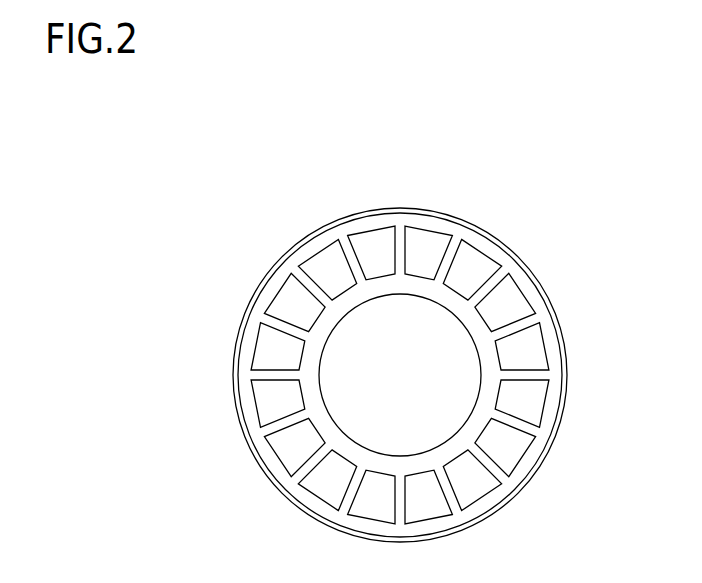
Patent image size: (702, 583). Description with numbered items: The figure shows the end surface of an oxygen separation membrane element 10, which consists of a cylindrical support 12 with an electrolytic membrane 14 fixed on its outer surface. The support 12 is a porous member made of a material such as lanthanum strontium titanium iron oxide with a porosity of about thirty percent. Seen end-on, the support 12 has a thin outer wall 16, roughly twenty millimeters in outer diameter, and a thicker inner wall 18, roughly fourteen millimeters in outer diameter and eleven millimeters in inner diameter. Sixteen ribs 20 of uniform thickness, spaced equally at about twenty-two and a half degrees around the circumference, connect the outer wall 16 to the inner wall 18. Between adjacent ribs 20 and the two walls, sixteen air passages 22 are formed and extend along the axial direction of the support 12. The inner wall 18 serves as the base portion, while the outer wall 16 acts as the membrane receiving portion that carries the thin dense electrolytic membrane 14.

The oxygen separation membrane element 10 is at (556, 266).
The support 12 is at (553, 313).
The electrolytic membrane 14 is at (283, 255).
The outer wall 16 is at (443, 223).
The inner wall 18 is at (387, 290).
The rib 20 is at (360, 258).
The air passage 22 is at (265, 358).